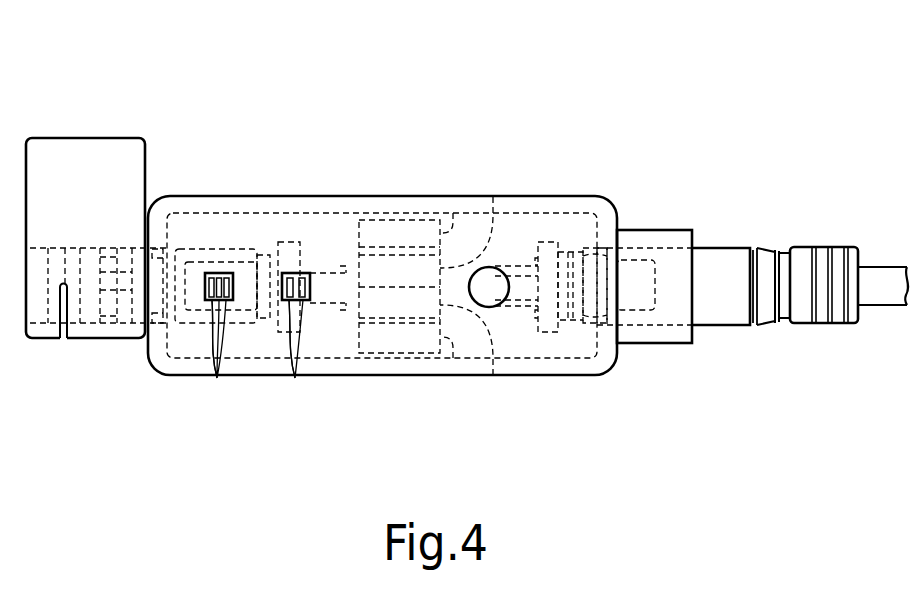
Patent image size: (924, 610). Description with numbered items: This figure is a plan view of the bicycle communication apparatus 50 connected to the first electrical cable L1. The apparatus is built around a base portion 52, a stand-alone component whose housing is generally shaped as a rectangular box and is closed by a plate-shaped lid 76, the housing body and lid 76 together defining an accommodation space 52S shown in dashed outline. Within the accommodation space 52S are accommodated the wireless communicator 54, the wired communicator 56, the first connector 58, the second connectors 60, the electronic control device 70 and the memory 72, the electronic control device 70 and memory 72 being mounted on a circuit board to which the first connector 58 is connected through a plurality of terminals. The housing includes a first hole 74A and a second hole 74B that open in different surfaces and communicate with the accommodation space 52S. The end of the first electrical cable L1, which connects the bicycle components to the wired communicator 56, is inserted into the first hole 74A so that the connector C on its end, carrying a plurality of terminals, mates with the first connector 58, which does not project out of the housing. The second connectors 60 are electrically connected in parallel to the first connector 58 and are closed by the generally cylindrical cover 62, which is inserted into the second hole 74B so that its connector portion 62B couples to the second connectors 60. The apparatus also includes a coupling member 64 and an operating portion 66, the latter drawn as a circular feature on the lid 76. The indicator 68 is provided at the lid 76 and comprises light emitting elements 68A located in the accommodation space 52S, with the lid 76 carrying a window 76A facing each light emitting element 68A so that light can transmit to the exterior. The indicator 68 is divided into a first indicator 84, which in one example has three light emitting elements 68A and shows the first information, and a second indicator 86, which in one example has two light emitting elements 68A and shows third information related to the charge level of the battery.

The bicycle communication apparatus 50 is at (705, 86).
The coupling member 64 is at (80, 150).
The cover 62 is at (100, 248).
The connector portion 62B is at (203, 258).
The second hole 74B is at (145, 314).
The base portion 52 is at (398, 375).
The accommodation space 52S is at (332, 237).
The indicator 68 is at (196, 239).
The second connectors 60 is at (202, 308).
The window 76A is at (297, 273).
The light emitting elements 68A is at (256, 361).
The first indicator 84 is at (218, 432).
The second indicator 86 is at (295, 432).
The lid 76 is at (398, 203).
The wireless communicator 54 is at (453, 213).
The wired communicator 56 is at (493, 197).
The memory 72 is at (453, 358).
The electronic control device 70 is at (493, 375).
The operating portion 66 is at (485, 277).
The connector C is at (632, 250).
The first connector 58 is at (637, 303).
The first hole 74A is at (694, 262).
The first electrical cable L1 is at (720, 313).